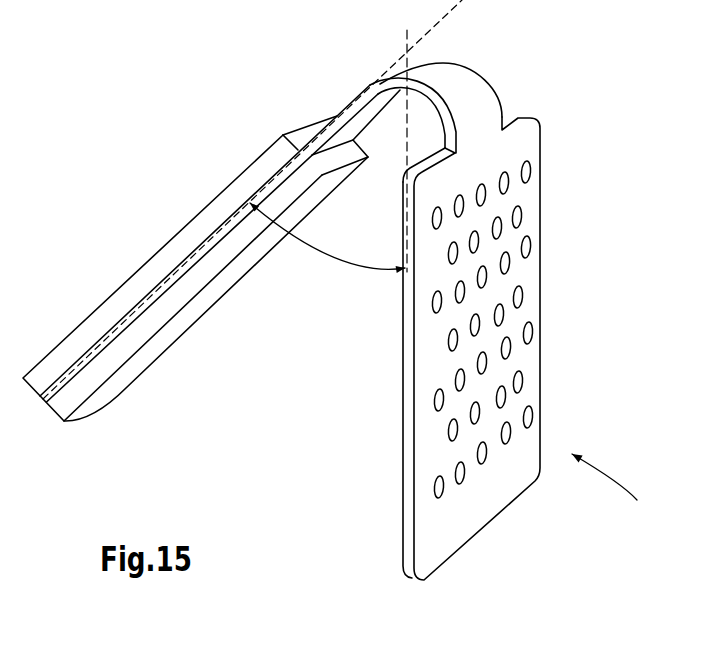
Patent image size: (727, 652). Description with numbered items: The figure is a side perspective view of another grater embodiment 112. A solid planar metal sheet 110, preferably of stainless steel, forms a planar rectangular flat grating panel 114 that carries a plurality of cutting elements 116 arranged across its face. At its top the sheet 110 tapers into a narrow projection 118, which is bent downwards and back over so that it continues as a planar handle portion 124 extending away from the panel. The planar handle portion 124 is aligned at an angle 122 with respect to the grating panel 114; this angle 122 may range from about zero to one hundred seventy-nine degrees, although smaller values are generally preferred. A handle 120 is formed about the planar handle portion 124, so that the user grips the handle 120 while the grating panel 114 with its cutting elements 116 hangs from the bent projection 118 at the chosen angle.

The planar metal sheet 110 is at (485, 115).
The grater embodiment 112 is at (617, 488).
The grating panel 114 is at (480, 505).
The cutting elements 116 is at (520, 300).
The narrow projection 118 is at (343, 112).
The handle 120 is at (120, 383).
The angle 122 is at (328, 173).
The planar handle portion 124 is at (177, 272).